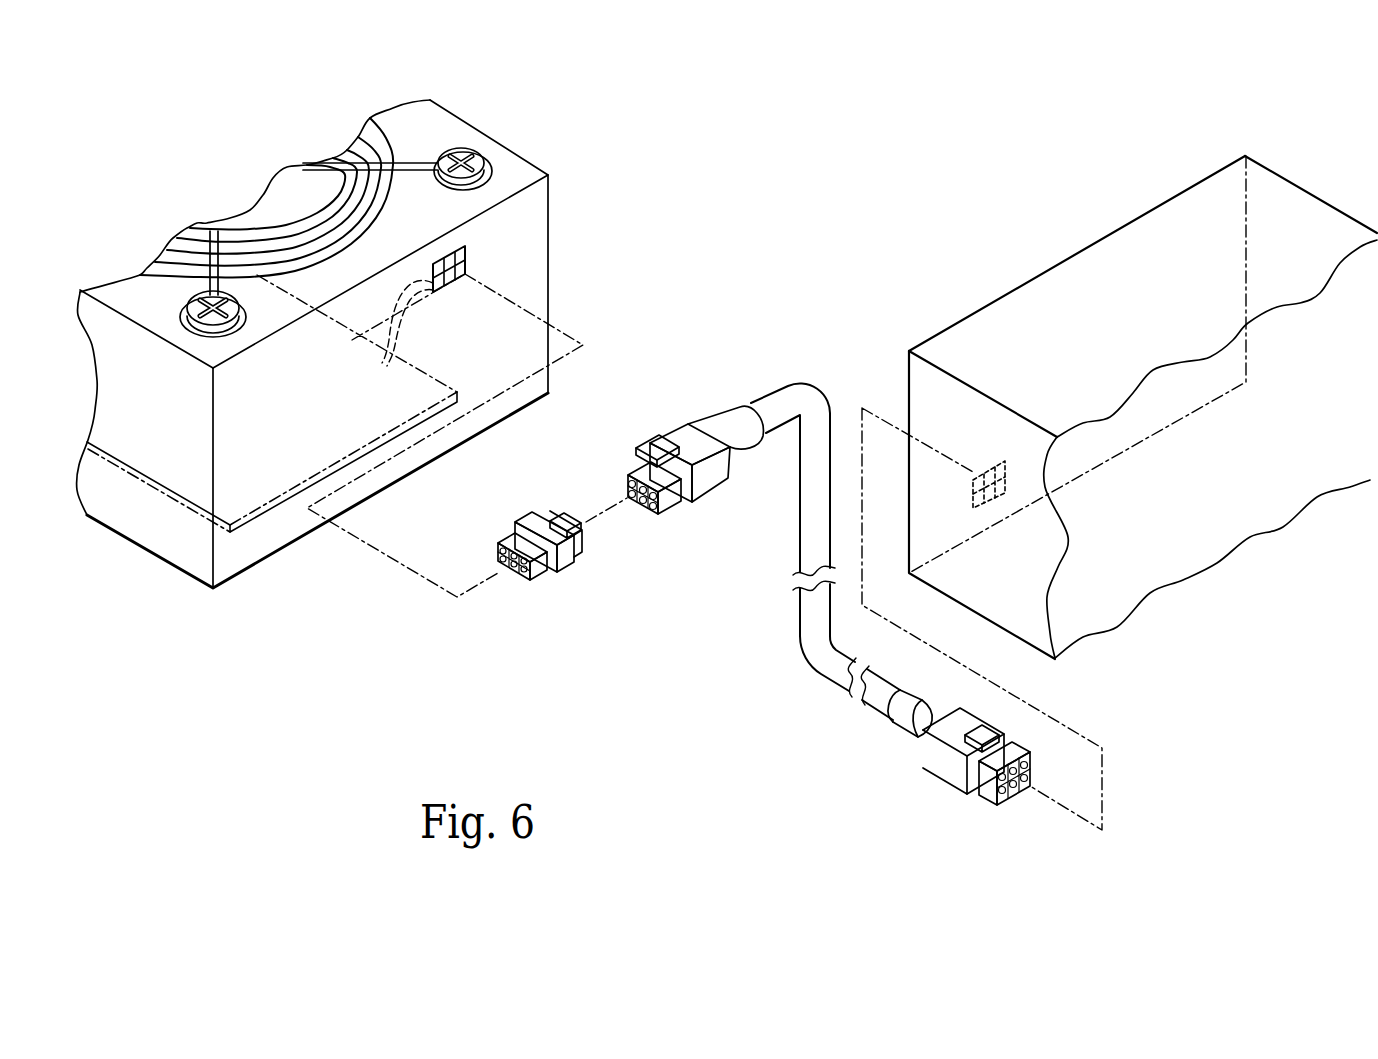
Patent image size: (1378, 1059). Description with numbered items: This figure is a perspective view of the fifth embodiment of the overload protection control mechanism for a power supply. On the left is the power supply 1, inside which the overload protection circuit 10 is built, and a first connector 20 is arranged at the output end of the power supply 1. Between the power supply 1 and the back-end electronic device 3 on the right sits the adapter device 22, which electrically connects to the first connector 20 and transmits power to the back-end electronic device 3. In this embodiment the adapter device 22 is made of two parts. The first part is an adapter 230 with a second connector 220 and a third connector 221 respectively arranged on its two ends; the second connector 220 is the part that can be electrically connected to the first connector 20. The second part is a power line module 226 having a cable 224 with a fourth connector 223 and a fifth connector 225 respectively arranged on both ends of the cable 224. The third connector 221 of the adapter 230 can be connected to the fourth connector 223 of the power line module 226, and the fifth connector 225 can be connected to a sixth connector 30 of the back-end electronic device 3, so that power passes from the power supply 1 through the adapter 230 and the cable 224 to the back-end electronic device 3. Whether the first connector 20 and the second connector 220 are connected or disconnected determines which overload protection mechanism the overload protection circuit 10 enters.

The power supply 1 is at (520, 142).
The overload protection circuit 10 is at (335, 466).
The first connector 20 is at (472, 253).
The adapter device 22 is at (757, 282).
The second connector 220 is at (587, 501).
The third connector 221 is at (577, 560).
The fourth connector 223 is at (707, 497).
The cable 224 is at (820, 653).
The fifth connector 225 is at (953, 773).
The power line module 226 is at (755, 389).
The adapter 230 is at (576, 496).
The back-end electronic device 3 is at (980, 295).
The sixth connector 30 is at (972, 494).